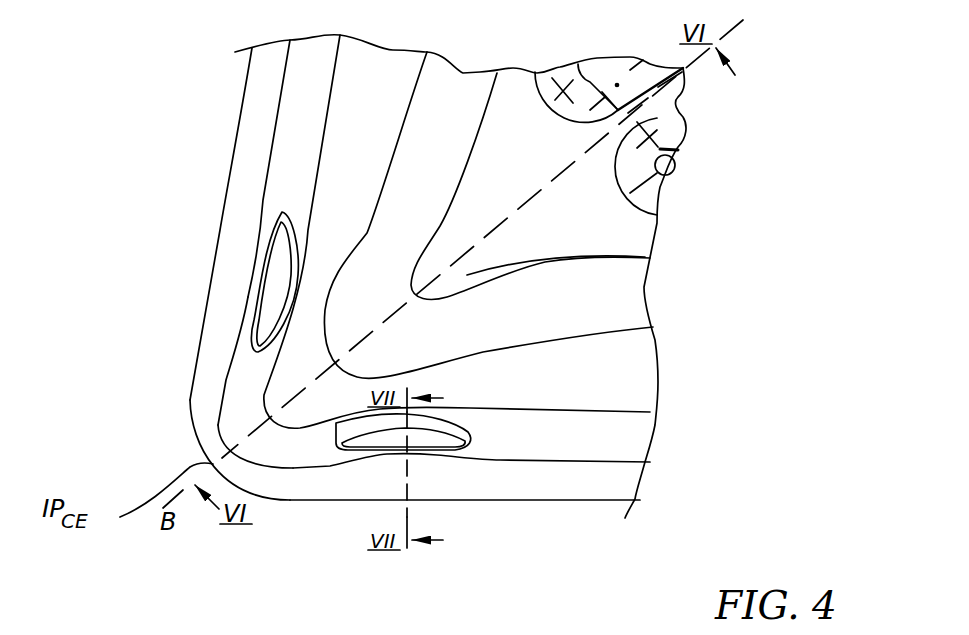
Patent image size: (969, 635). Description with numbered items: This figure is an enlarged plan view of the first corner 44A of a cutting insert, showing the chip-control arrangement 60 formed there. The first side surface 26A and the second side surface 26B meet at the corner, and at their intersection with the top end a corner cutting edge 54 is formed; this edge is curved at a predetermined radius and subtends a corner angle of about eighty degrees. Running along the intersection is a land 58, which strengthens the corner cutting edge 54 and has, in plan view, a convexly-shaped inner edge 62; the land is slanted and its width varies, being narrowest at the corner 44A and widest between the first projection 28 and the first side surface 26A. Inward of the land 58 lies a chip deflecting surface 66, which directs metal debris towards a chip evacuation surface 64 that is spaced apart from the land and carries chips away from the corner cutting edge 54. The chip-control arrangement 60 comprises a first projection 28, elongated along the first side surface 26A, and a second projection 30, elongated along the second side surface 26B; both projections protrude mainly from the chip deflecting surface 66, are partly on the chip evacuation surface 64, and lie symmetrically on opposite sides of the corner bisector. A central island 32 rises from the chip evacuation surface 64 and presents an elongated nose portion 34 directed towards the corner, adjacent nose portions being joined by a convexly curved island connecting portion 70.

The first side surface 26A is at (543, 500).
The second side surface 26B is at (240, 113).
The first projection 28 is at (445, 452).
The second projection 30 is at (262, 275).
The central island 32 is at (606, 229).
The elongated nose portion 34 is at (647, 258).
The first corner 44A is at (212, 535).
The corner cutting edge 54 is at (197, 445).
The land 58 is at (212, 360).
The chip-control arrangement 60 is at (188, 464).
The convexly-shaped inner edge 62 is at (243, 313).
The chip evacuation surface 64 is at (224, 424).
The chip deflecting surface 66 is at (283, 172).
The island connecting portion 70 is at (587, 305).